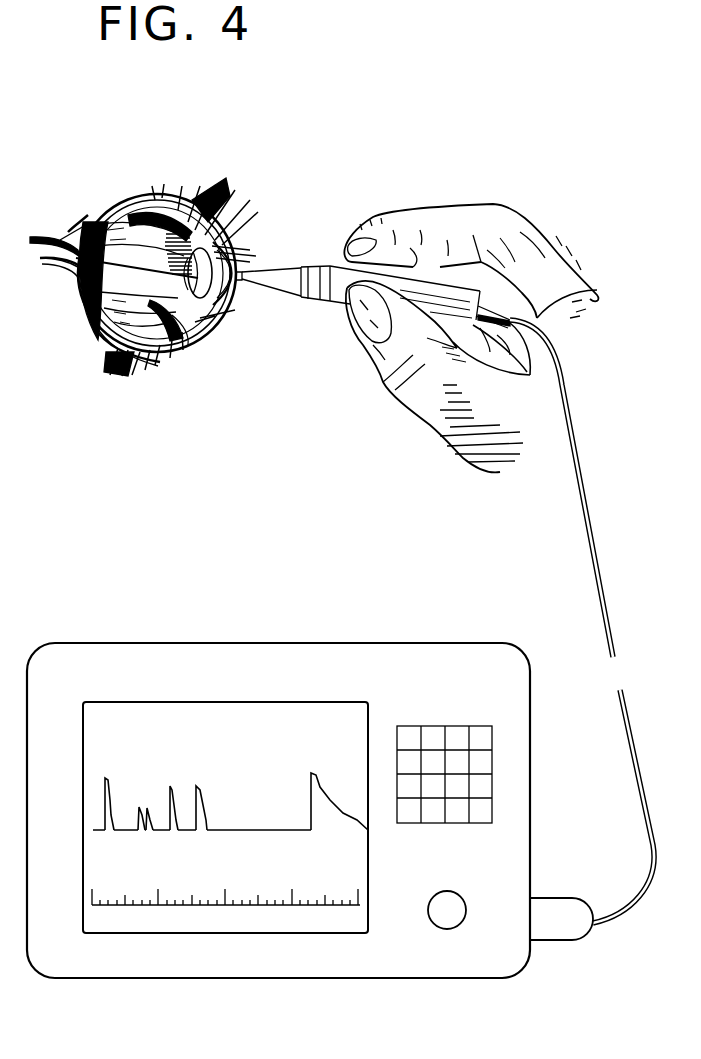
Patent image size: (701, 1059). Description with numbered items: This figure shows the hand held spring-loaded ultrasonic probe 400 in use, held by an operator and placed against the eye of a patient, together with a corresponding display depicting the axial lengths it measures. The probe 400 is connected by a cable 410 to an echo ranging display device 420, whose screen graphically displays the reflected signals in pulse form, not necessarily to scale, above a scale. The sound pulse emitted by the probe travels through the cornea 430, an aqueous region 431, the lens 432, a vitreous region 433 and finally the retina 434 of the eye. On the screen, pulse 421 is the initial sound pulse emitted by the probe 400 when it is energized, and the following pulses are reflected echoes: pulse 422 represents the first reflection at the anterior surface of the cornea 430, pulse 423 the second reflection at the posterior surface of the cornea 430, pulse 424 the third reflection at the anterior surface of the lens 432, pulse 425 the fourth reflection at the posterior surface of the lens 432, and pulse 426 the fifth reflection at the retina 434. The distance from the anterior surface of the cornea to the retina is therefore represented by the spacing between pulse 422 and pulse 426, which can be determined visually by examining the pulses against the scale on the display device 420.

The hand held spring-loaded ultrasonic probe 400 is at (342, 267).
The cable 410 is at (588, 565).
The echo ranging display device 420 is at (487, 697).
The pulse 421 is at (105, 777).
The pulse 422 is at (139, 807).
The pulse 423 is at (148, 808).
The pulse 424 is at (172, 784).
The pulse 425 is at (207, 774).
The pulse 426 is at (311, 773).
The cornea 430 is at (232, 262).
The aqueous region 431 is at (233, 285).
The lens 432 is at (228, 236).
The vitreous region 433 is at (120, 338).
The retina 434 is at (83, 223).